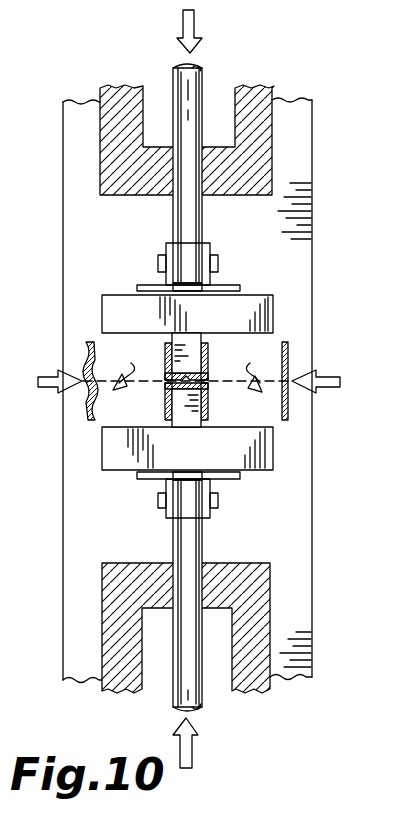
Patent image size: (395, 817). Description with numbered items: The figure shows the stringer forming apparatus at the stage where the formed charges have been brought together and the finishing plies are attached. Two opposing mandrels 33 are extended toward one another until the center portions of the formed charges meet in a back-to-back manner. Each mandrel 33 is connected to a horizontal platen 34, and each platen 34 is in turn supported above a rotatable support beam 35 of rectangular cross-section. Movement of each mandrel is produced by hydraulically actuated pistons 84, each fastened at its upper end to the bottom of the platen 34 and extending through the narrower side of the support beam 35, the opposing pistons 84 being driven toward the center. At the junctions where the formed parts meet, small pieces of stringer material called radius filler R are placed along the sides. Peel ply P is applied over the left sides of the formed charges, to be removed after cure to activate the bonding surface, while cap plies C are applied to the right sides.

The support beam 35 is at (263, 130).
The hydraulically actuated piston 84 is at (183, 215).
The platen 34 is at (265, 313).
The mandrel 33 is at (190, 350).
The peel ply P is at (87, 413).
The cap ply C is at (288, 407).
The radius filler R is at (187, 366).